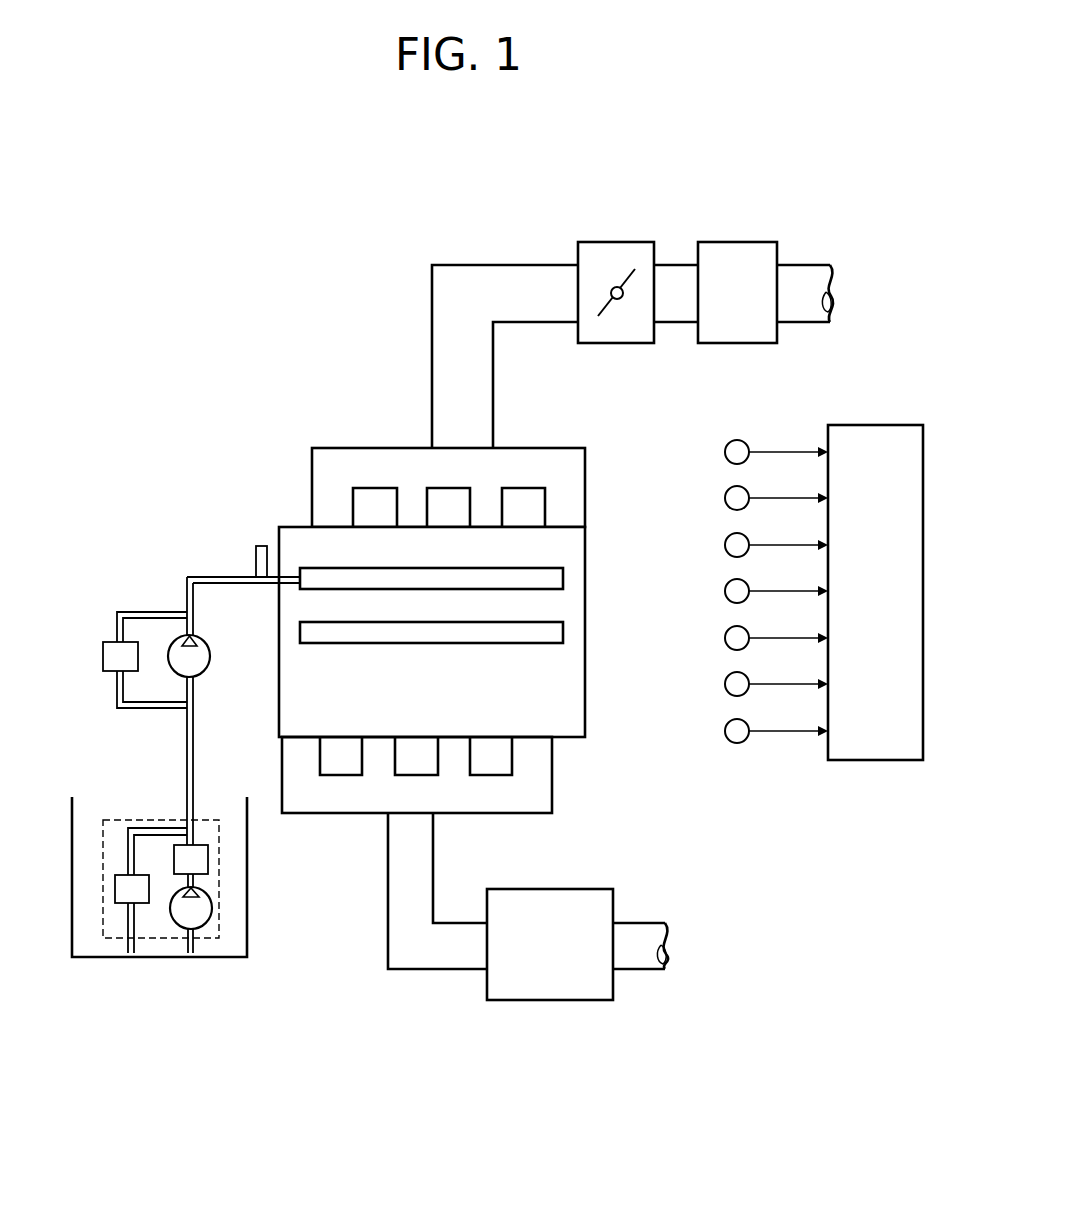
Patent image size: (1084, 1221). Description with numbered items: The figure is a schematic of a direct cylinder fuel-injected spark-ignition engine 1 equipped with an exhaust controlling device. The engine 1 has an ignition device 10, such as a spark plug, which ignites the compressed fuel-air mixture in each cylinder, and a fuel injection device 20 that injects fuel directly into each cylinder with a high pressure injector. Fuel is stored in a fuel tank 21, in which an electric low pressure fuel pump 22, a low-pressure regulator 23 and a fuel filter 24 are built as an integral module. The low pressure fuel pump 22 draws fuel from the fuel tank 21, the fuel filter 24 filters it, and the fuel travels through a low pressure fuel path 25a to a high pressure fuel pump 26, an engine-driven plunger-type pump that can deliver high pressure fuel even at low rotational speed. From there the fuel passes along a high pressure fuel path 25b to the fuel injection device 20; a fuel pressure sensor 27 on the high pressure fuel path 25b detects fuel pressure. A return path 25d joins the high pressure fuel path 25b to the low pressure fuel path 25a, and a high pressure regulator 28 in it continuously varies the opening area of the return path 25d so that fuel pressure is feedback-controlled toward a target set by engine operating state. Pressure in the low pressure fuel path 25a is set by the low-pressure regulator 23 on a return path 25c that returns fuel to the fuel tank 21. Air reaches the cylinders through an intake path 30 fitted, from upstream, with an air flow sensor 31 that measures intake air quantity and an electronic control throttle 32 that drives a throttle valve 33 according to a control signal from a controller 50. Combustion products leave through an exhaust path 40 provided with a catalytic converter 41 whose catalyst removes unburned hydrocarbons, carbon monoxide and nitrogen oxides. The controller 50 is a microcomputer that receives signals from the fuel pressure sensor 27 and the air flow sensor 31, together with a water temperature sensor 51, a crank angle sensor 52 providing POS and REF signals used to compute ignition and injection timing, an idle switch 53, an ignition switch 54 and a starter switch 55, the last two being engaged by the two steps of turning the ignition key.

The engine 1 is at (314, 392).
The ignition device 10 is at (565, 629).
The fuel injection device 20 is at (565, 575).
The fuel tank 21 is at (250, 832).
The low pressure fuel pump 22 is at (212, 910).
The low-pressure regulator 23 is at (120, 905).
The fuel filter 24 is at (208, 858).
The low pressure fuel path 25a is at (186, 748).
The high pressure fuel path 25b is at (213, 577).
The return path 25c is at (128, 840).
The return path 25d is at (117, 626).
The high pressure fuel pump 26 is at (211, 656).
The fuel pressure sensor 27 is at (261, 545).
The high pressure regulator 28 is at (108, 674).
The intake path 30 is at (462, 263).
The air flow sensor 31 is at (742, 242).
The electronic control throttle 32 is at (620, 242).
The throttle valve 33 is at (613, 305).
The exhaust path 40 is at (436, 840).
The catalytic converter 41 is at (555, 1003).
The controller 50 is at (885, 763).
The water temperature sensor 51 is at (724, 545).
The crank angle sensor 52 is at (724, 591).
The idle switch 53 is at (724, 638).
The ignition switch 54 is at (724, 684).
The starter switch 55 is at (724, 731).